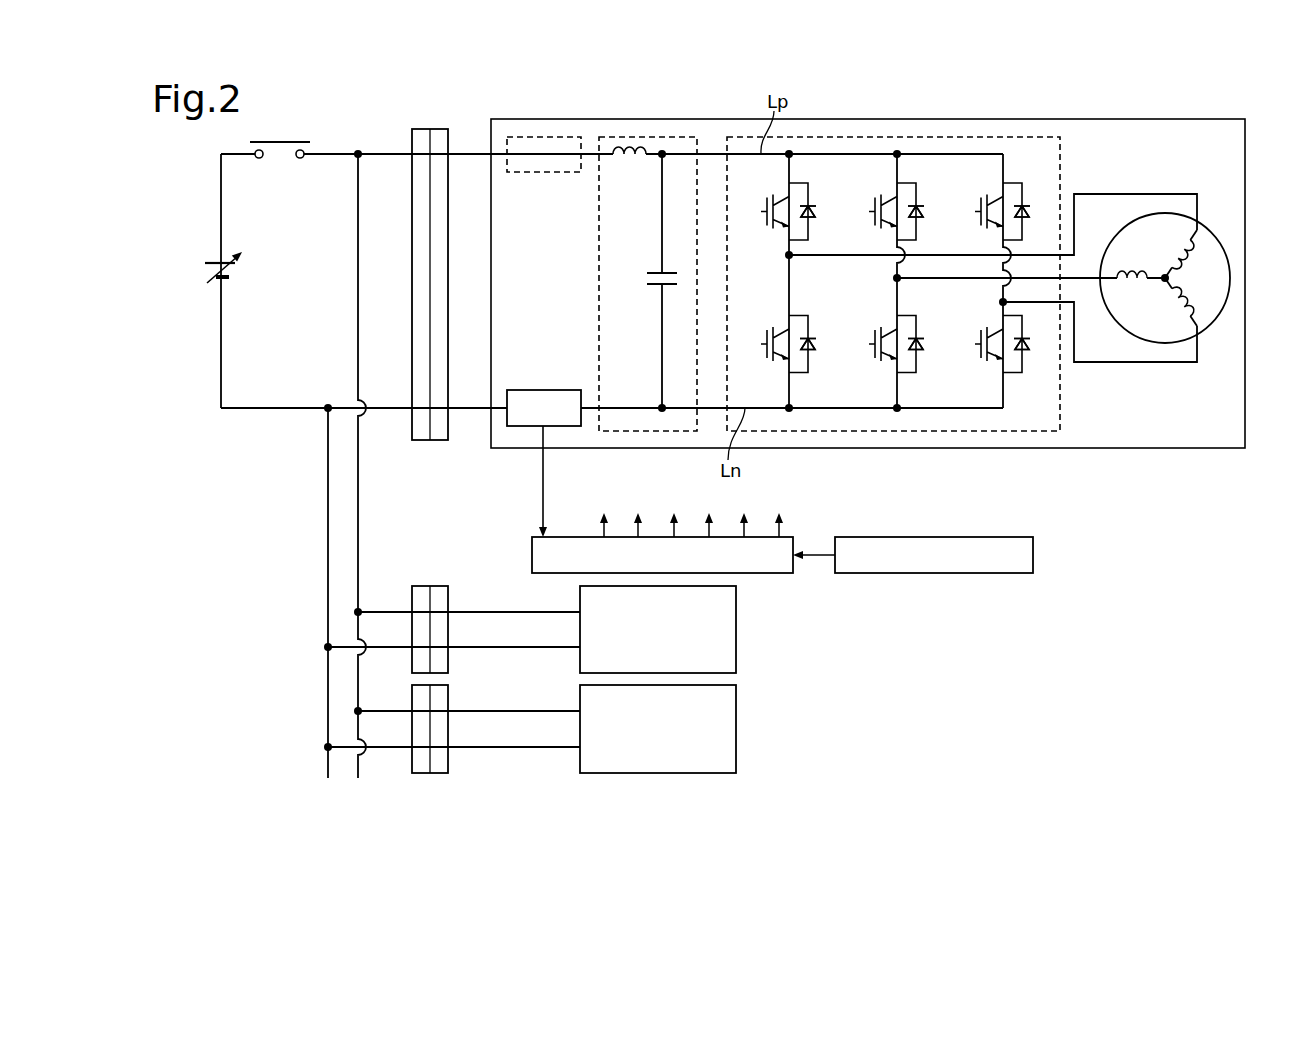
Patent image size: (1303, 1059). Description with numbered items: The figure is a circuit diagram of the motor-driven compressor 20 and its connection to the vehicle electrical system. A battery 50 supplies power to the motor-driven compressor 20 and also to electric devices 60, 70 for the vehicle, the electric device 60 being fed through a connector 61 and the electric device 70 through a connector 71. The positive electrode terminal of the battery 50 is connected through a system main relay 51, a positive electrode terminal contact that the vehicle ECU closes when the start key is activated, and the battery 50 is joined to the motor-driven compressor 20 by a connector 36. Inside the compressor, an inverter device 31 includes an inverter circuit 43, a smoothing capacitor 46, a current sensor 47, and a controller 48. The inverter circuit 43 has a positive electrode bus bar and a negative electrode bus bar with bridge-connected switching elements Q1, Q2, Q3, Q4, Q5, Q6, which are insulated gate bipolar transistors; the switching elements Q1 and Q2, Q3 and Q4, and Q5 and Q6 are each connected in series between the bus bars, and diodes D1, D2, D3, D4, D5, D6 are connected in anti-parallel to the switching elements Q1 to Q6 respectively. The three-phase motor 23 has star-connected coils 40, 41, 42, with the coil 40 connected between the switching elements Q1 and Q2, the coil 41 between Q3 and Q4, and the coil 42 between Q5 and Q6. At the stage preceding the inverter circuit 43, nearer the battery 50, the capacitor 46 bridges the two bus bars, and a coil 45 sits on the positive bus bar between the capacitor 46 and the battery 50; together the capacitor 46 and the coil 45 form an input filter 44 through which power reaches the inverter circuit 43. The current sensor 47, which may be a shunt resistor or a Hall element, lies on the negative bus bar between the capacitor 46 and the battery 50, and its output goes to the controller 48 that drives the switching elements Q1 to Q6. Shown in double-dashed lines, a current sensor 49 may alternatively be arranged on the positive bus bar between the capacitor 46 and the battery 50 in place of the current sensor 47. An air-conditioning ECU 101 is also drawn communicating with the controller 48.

The motor-driven compressor 20 is at (725, 119).
The three-phase motor 23 is at (1212, 236).
The inverter device 31 is at (1072, 160).
The connector 36 is at (450, 282).
The coil 40 is at (1187, 255).
The coil 41 is at (1124, 268).
The coil 42 is at (1177, 306).
The inverter circuit 43 is at (906, 137).
The input filter 44 is at (601, 137).
The coil 45 is at (643, 148).
The capacitor 46 is at (665, 272).
The current sensor 47 is at (543, 390).
The controller 48 is at (790, 537).
The current sensor 49 is at (546, 173).
The battery 50 is at (216, 262).
The system main relay 51 is at (278, 141).
The electric device 60 is at (736, 628).
The connector 61 is at (448, 628).
The electric device 70 is at (736, 727).
The connector 71 is at (448, 727).
The air-conditioning ECU 101 is at (990, 537).
The switching element Q1 is at (783, 196).
The switching element Q2 is at (783, 328).
The switching element Q3 is at (891, 196).
The switching element Q4 is at (891, 328).
The switching element Q5 is at (997, 196).
The switching element Q6 is at (997, 328).
The diode D1 is at (812, 206).
The diode D2 is at (812, 350).
The diode D3 is at (920, 206).
The diode D4 is at (920, 350).
The diode D5 is at (1026, 206).
The diode D6 is at (1026, 350).